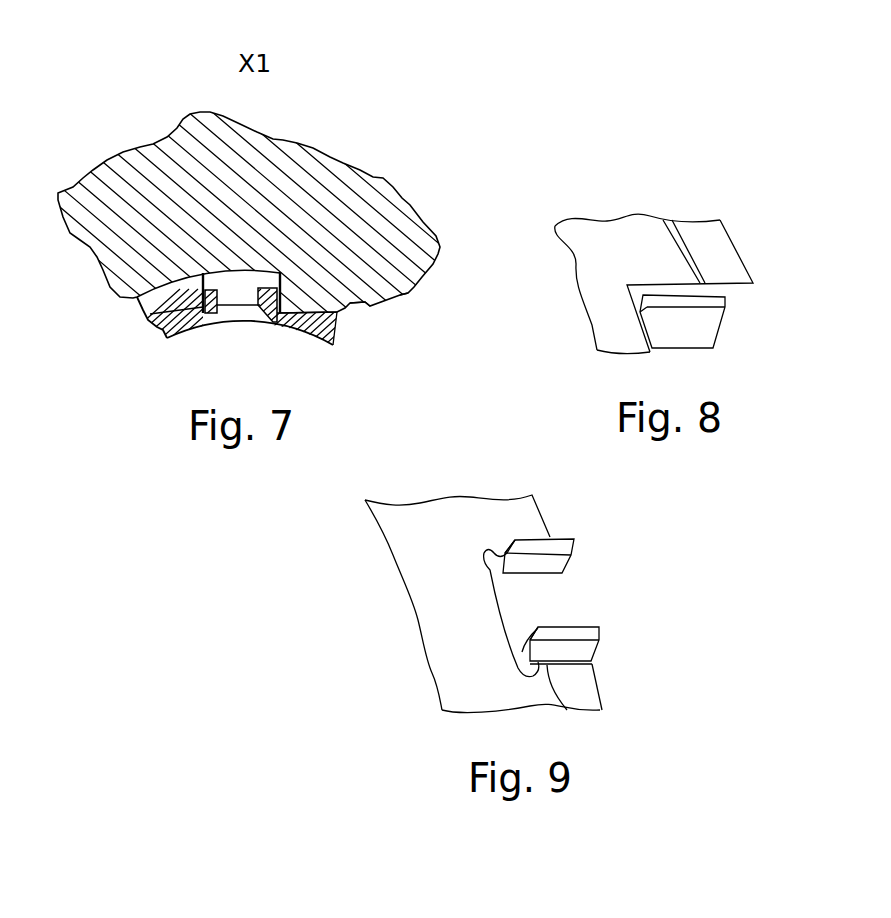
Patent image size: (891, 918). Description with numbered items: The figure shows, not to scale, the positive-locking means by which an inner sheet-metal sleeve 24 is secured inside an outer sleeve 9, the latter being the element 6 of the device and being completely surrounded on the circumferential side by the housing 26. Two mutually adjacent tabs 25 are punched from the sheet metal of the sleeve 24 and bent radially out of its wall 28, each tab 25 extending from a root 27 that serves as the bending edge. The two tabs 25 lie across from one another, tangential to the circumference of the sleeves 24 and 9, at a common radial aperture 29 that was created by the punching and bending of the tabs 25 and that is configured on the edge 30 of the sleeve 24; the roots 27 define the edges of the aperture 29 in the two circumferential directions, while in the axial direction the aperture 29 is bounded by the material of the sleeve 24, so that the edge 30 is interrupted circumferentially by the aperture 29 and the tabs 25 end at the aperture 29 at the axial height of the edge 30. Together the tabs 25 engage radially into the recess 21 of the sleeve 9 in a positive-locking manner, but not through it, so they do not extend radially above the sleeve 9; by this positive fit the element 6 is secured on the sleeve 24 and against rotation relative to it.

In FIG. 7, the element 6 is at (350, 297).
In FIG. 7, the sleeve 9 is at (407, 294).
In FIG. 8, the sleeve 9 is at (753, 283).
In FIG. 7, the recess 21 is at (240, 306).
In FIG. 8, the recess 21 is at (733, 310).
In FIG. 7, the sleeve 24 is at (332, 343).
In FIG. 9, the sleeve 24 is at (437, 605).
In FIG. 7, the tabs 25 is at (212, 288).
In FIG. 8, the tabs 25 is at (710, 333).
In FIG. 9, the tabs 25 is at (567, 548).
In FIG. 7, the housing 26 is at (400, 215).
In FIG. 7, the root 27 is at (204, 270).
In FIG. 9, the root 27 is at (563, 712).
In FIG. 9, the wall 28 is at (580, 700).
In FIG. 7, the radial aperture 29 is at (245, 314).
In FIG. 9, the radial aperture 29 is at (567, 600).
In FIG. 9, the edge 30 is at (597, 683).